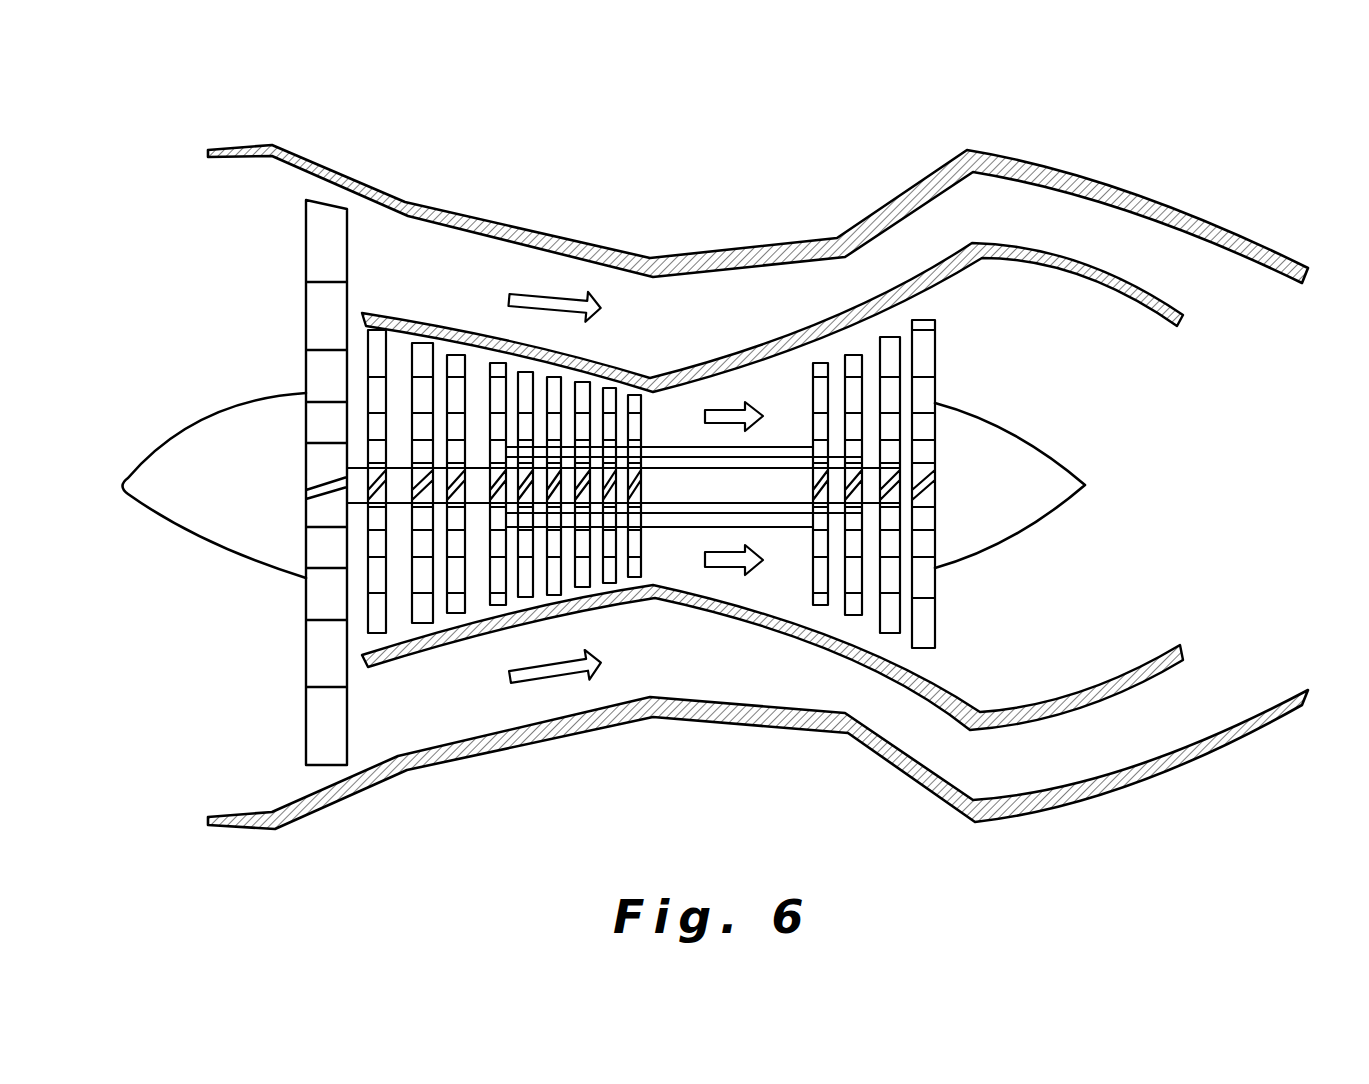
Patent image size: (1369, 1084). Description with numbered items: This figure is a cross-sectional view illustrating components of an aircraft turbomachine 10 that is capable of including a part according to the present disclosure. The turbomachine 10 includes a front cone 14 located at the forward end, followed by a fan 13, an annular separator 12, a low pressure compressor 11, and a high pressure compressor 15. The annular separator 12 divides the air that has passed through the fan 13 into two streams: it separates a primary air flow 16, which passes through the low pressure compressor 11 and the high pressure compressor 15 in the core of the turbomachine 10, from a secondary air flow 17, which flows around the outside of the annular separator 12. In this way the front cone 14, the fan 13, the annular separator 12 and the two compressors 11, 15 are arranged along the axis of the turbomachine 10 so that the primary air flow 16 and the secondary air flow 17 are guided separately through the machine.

The turbomachine 10 is at (850, 117).
The low pressure compressor 11 is at (460, 625).
The annular separator 12 is at (886, 655).
The fan 13 is at (324, 733).
The front cone 14 is at (177, 485).
The high pressure compressor 15 is at (580, 575).
The primary air flow 16 is at (733, 565).
The secondary air flow 17 is at (937, 247).